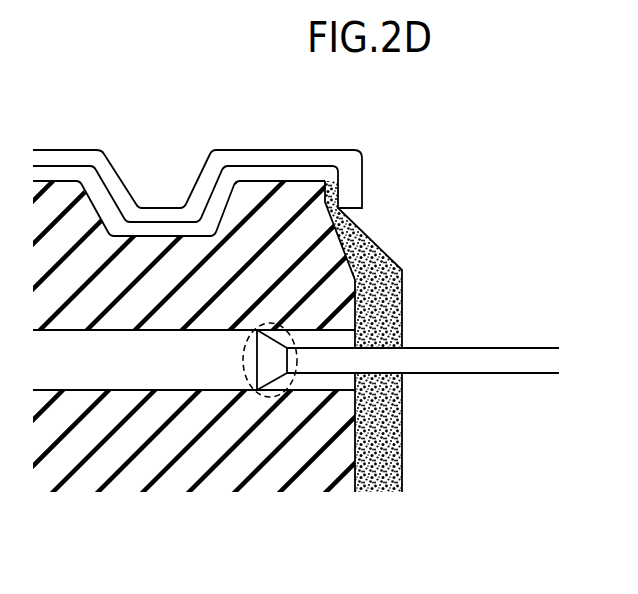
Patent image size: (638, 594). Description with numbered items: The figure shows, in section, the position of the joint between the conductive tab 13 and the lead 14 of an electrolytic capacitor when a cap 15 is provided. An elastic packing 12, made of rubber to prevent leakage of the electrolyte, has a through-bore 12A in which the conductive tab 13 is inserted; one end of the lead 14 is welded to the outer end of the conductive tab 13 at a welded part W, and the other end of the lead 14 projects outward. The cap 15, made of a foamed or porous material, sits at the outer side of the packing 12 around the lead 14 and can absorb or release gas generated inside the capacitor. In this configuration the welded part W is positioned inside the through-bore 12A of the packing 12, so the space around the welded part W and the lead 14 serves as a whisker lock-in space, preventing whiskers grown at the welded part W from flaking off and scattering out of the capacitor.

The packing 12 is at (60, 192).
The through-bore 12A is at (318, 382).
The conductive tab 13 is at (165, 353).
The lead 14 is at (510, 365).
The cap 15 is at (390, 258).
The welded part W is at (290, 335).